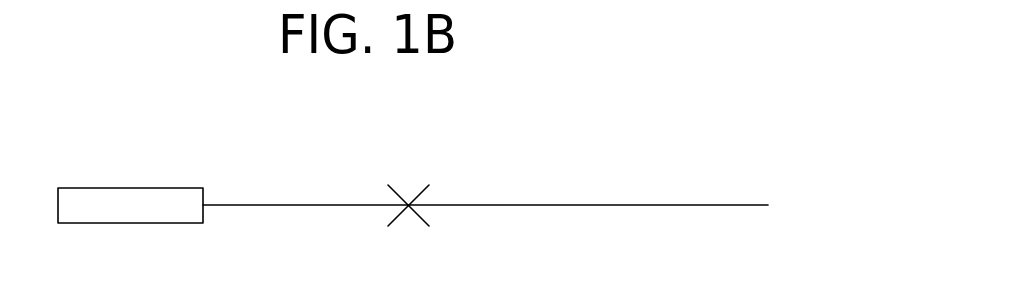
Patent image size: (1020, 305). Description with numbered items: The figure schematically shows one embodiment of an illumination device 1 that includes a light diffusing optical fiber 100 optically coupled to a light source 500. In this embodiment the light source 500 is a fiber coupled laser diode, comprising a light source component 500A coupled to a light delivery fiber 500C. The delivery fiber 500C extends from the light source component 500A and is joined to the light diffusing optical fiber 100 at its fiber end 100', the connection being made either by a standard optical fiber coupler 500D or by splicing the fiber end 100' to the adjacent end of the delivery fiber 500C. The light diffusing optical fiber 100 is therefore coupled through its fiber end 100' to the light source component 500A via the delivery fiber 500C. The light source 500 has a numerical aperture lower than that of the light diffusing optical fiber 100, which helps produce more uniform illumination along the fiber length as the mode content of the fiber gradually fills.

The illumination device 1 is at (659, 108).
The light diffusing optical fiber 100 is at (588, 169).
The fiber end 100' is at (450, 165).
The light source 500 is at (330, 167).
The light source component 500A is at (118, 223).
The light delivery fiber 500C is at (338, 204).
The optical fiber coupler 500D is at (410, 228).